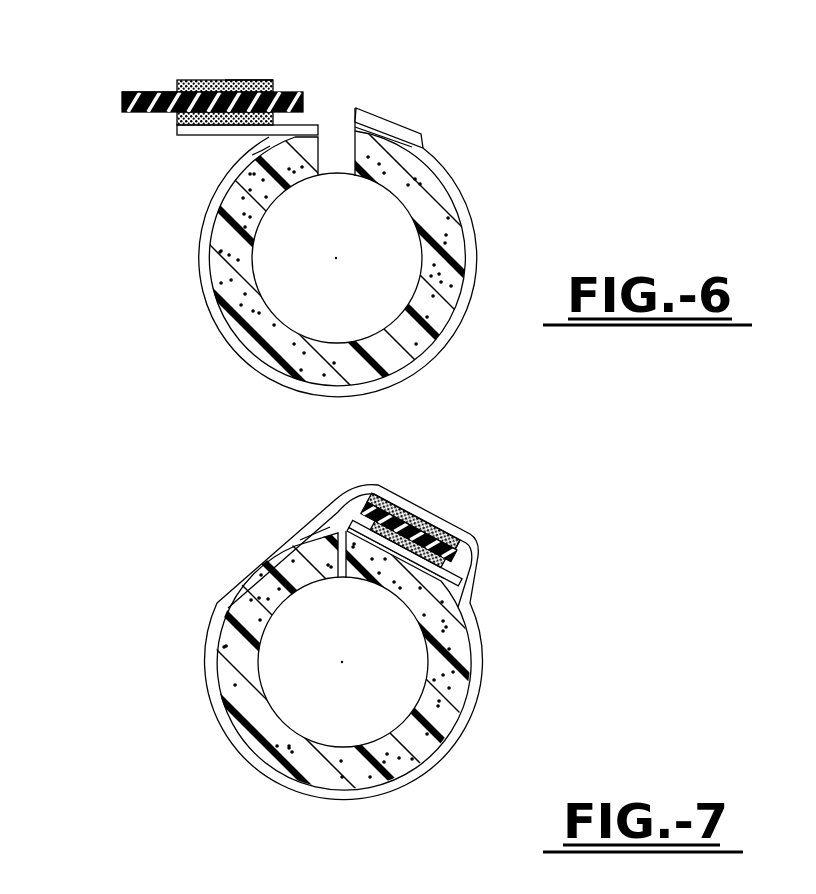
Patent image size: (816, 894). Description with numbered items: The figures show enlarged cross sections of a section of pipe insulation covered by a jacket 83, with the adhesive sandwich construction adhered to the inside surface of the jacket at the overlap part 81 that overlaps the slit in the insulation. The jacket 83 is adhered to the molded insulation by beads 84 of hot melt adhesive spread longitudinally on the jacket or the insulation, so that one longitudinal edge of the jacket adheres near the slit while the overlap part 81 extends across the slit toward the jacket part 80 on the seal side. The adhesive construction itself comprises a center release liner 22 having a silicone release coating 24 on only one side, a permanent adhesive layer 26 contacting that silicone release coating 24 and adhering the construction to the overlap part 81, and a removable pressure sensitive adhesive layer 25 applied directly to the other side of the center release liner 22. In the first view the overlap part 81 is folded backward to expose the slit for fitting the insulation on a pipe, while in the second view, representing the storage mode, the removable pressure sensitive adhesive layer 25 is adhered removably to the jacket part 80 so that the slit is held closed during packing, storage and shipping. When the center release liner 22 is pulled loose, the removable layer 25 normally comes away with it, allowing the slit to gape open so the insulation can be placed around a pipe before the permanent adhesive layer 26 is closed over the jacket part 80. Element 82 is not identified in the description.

In FIG. 6, the center release liner 22 is at (128, 92).
In FIG. 7, the center release liner 22 is at (465, 562).
In FIG. 6, the silicone release coating 24 is at (203, 80).
In FIG. 7, the silicone release coating 24 is at (366, 508).
In FIG. 6, the removable pressure sensitive adhesive layer 25 is at (182, 126).
In FIG. 7, the removable pressure sensitive adhesive layer 25 is at (458, 522).
In FIG. 6, the permanent adhesive layer 26 is at (262, 80).
In FIG. 7, the permanent adhesive layer 26 is at (440, 584).
In FIG. 6, the jacket part 80 is at (398, 123).
In FIG. 7, the jacket part 80 is at (383, 536).
In FIG. 6, the overlap part 81 is at (213, 134).
In FIG. 7, the overlap part 81 is at (380, 534).
In FIG. 6, the strip upper surface 82 is at (153, 90).
In FIG. 6, the jacket 83 is at (200, 262).
In FIG. 7, the jacket 83 is at (397, 443).
In FIG. 6, the beads of hot melt adhesive 84 is at (413, 156).
In FIG. 7, the beads of hot melt adhesive 84 is at (287, 548).